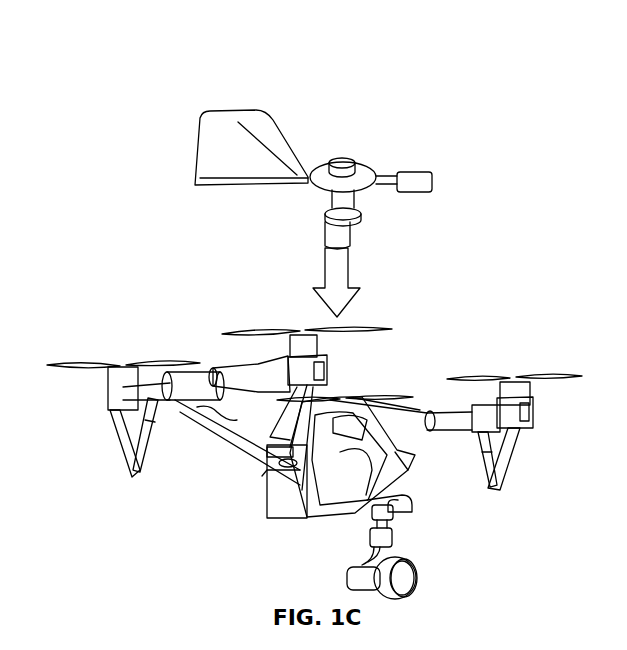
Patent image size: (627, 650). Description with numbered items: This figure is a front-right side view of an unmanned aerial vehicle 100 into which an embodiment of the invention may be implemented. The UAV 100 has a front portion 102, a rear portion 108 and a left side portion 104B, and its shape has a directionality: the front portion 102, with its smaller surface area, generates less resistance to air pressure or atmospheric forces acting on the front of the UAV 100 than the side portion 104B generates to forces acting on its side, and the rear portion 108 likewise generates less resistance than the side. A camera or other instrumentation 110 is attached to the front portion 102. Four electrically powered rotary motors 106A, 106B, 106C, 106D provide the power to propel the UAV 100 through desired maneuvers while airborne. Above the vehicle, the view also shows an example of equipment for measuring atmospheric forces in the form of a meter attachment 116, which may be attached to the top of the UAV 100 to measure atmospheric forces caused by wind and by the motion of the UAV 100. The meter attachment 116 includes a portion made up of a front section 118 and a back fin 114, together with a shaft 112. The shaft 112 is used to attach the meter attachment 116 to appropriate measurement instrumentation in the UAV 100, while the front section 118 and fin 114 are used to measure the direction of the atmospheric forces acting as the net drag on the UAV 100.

The unmanned aerial vehicle 100 is at (459, 324).
The front portion 102 is at (430, 457).
The left side portion 104B is at (303, 522).
The rotary motor 106A is at (515, 375).
The rotary motor 106B is at (343, 397).
The rotary motor 106C is at (303, 325).
The rotary motor 106D is at (125, 372).
The rear portion 108 is at (263, 476).
The camera or other instrumentation 110 is at (418, 580).
The shaft 112 is at (348, 235).
The back fin 114 is at (233, 109).
The meter attachment 116 is at (345, 173).
The front section 118 is at (413, 173).